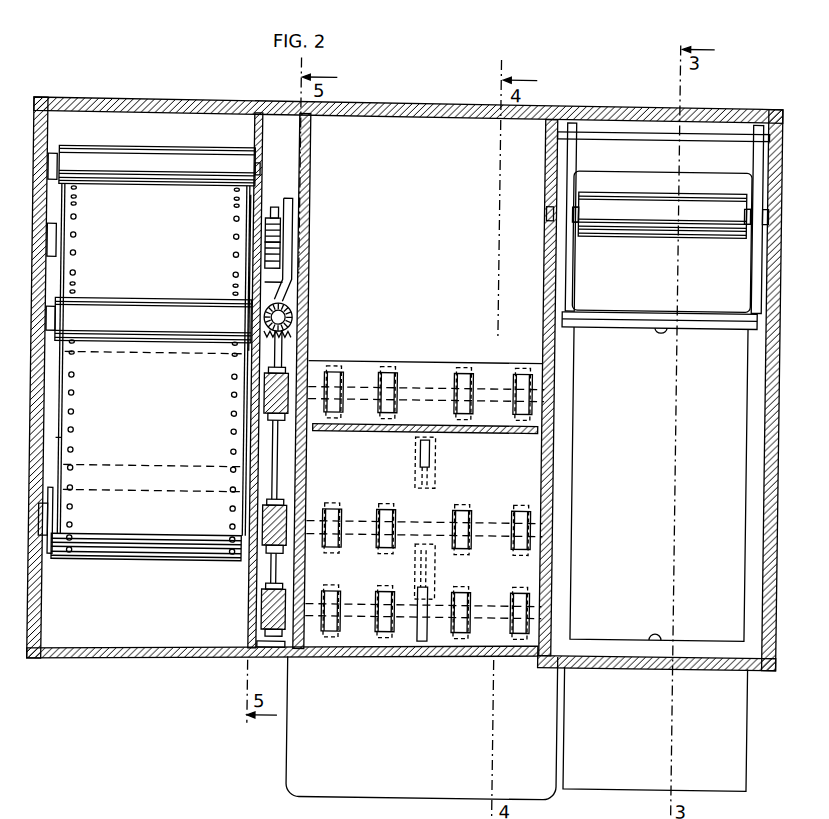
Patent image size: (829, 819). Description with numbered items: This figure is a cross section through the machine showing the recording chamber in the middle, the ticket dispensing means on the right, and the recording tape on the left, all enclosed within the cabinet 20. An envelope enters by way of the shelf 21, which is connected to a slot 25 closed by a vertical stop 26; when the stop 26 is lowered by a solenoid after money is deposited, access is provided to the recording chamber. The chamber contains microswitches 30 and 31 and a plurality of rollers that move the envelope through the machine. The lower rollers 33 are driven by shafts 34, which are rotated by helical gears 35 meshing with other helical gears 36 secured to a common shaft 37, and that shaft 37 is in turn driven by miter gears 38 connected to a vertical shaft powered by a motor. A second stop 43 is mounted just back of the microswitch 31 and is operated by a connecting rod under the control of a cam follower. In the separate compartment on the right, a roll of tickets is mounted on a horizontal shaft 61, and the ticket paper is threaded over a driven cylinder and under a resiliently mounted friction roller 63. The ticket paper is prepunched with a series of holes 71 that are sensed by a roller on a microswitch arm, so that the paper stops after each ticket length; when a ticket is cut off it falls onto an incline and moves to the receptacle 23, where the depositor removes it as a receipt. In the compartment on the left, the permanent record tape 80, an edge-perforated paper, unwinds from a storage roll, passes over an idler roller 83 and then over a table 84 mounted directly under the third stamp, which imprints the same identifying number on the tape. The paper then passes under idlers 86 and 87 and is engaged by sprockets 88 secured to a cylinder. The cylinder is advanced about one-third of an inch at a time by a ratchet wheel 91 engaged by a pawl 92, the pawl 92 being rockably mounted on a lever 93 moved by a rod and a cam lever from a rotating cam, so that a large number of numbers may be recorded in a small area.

The cabinet 20 is at (79, 652).
The shelf 21 is at (303, 740).
The receptacle 23 is at (752, 744).
The slot 25 is at (357, 651).
The vertical stop 26 is at (432, 650).
The microswitch 30 is at (438, 570).
The microswitch 31 is at (438, 465).
The lower rollers 33 is at (341, 516).
The shafts 34 is at (407, 387).
The helical gears 35 is at (284, 365).
The helical gears 36 is at (287, 363).
The common shaft 37 is at (283, 448).
The miter gears 38 is at (295, 313).
The second stop 43 is at (504, 424).
The horizontal shaft 61 is at (562, 275).
The friction roller 63 is at (693, 189).
The holes 71 is at (660, 325).
The permanent record tape 80 is at (165, 437).
The idler roller 83 is at (61, 552).
The table 84 is at (60, 437).
The idler 86 is at (128, 300).
The idler 87 is at (116, 154).
The sprockets 88 is at (77, 252).
The ratchet wheel 91 is at (281, 255).
The pawl 92 is at (278, 203).
The lever 93 is at (289, 223).